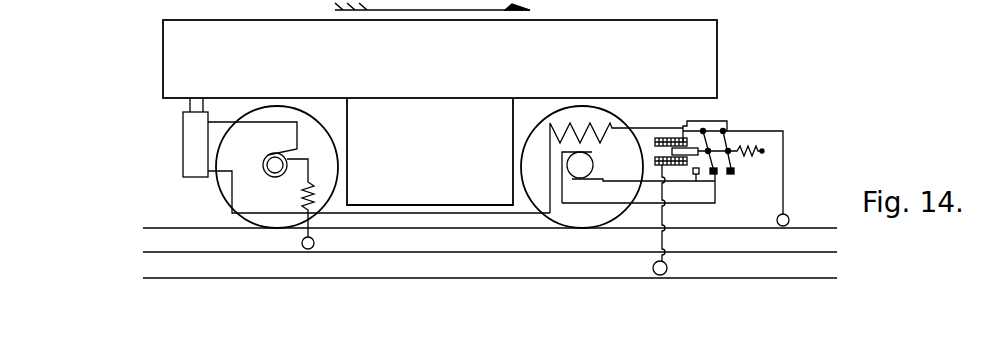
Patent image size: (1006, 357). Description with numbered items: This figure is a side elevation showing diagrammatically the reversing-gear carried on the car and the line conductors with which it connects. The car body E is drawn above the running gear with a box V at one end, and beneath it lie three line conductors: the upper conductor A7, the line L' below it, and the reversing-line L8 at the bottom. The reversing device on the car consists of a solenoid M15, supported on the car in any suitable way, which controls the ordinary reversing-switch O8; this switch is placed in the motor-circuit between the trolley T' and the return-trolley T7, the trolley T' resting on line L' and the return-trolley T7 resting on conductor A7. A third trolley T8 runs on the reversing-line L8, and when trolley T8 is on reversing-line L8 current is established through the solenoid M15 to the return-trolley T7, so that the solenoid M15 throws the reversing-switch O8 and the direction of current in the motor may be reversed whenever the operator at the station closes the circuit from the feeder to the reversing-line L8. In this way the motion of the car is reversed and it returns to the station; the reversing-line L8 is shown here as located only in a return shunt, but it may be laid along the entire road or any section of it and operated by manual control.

The car body E is at (440, 104).
The controller box V is at (182, 143).
The solenoid M15 is at (689, 151).
The reversing-switch O8 is at (729, 130).
The trolley T' is at (317, 244).
The line conductor L' is at (490, 263).
The return-trolley T7 is at (768, 178).
The conductor A7 is at (490, 218).
The trolley T8 is at (670, 267).
The reversing-line L8 is at (490, 290).